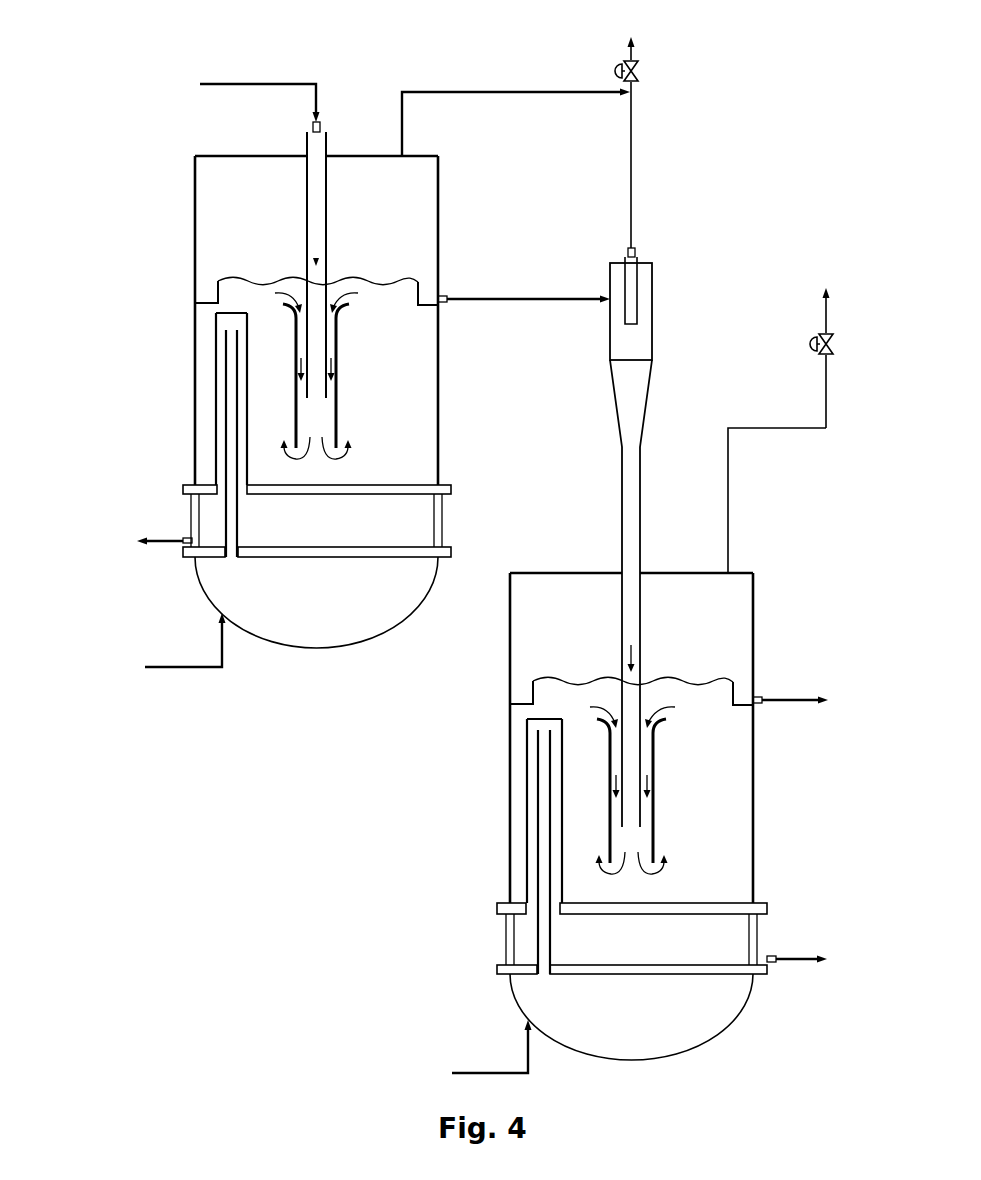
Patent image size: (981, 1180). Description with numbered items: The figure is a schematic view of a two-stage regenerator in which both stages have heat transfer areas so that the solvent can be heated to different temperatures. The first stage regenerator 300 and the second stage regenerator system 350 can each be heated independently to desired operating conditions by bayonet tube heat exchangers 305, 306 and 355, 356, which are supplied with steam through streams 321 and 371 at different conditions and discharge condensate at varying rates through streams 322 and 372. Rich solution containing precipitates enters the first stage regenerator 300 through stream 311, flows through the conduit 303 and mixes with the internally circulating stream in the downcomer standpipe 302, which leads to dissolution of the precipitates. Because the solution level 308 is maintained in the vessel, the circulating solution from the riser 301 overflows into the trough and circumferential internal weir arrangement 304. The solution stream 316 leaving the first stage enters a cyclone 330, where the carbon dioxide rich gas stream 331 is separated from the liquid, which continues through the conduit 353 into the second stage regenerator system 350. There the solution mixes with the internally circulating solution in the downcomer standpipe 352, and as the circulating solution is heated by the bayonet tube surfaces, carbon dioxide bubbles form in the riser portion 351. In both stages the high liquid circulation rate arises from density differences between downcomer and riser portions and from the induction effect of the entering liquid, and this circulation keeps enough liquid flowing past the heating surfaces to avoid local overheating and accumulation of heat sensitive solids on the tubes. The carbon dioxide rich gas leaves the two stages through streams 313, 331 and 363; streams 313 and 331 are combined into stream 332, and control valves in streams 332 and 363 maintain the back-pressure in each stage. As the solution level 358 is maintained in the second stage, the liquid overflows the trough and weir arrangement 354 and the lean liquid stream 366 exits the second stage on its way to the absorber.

The first stage regenerator 300 is at (163, 240).
The riser 301 is at (387, 358).
The downcomer standpipe 302 is at (337, 393).
The conduit 303 is at (325, 225).
The trough and circumferential internal weir arrangement 304 is at (418, 290).
The bayonet tube heat exchanger 305 is at (216, 377).
The bayonet tube heat exchanger 306 is at (226, 402).
The solution level 308 is at (397, 275).
The rich solution stream 311 is at (232, 83).
The CO2 rich gas stream 313 is at (487, 90).
The solution stream 316 is at (525, 297).
The steam stream 321 is at (178, 663).
The condensate stream 322 is at (162, 540).
The cyclone 330 is at (652, 283).
The CO2 rich gas stream 331 is at (632, 137).
The combined CO2 rich gas stream 332 is at (630, 55).
The second stage regenerator system 350 is at (792, 582).
The riser portion 351 is at (703, 788).
The downcomer standpipe 352 is at (653, 820).
The conduit 353 is at (620, 635).
The trough and weir arrangement 354 is at (737, 688).
The bayonet tube heat exchanger 355 is at (527, 790).
The bayonet tube heat exchanger 356 is at (537, 813).
The solution level 358 is at (717, 675).
The CO2 rich gas stream 363 is at (823, 310).
The lean liquid stream 366 is at (797, 698).
The steam stream 371 is at (485, 1072).
The condensate stream 372 is at (778, 958).